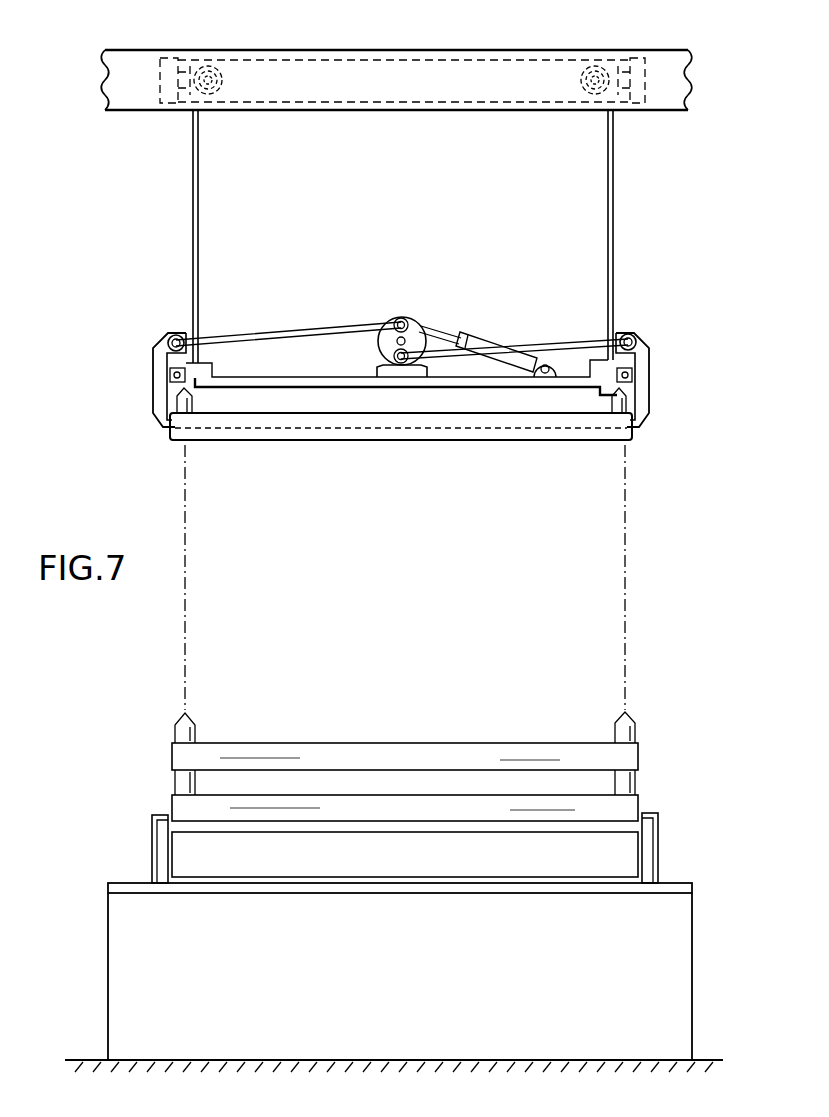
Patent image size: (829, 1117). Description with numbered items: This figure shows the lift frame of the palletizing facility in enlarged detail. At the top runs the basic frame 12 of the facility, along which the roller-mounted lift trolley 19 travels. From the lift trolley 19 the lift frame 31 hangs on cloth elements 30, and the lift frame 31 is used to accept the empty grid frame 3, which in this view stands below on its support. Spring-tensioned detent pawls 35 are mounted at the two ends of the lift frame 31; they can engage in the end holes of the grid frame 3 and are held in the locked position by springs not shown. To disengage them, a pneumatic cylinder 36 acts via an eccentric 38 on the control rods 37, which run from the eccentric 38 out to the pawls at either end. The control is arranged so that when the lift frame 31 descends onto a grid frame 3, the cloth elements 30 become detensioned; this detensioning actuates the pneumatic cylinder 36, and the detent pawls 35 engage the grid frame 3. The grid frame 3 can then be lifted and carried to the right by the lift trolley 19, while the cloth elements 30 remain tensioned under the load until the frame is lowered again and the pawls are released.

The empty grid frame 3 is at (387, 750).
The basic frame 12 is at (124, 108).
The lift trolley 19 is at (638, 62).
The cloth elements 30 is at (193, 223).
The lift frame 31 is at (330, 383).
The detent pawls 35 is at (154, 381).
The pneumatic cylinder 36 is at (478, 338).
The control rods 37 is at (299, 331).
The eccentric 38 is at (421, 320).